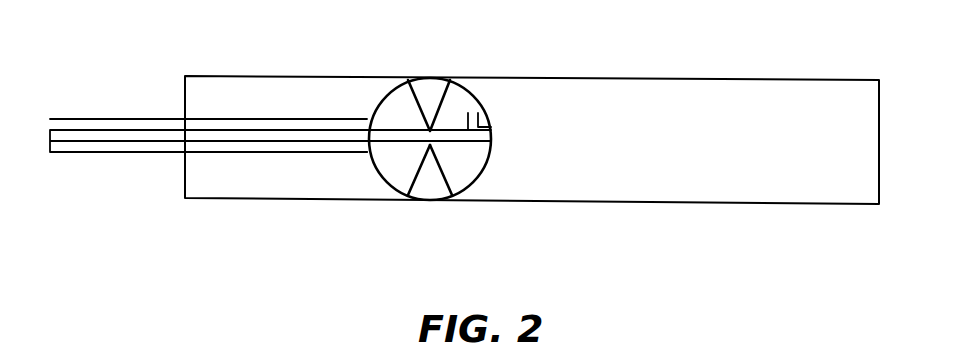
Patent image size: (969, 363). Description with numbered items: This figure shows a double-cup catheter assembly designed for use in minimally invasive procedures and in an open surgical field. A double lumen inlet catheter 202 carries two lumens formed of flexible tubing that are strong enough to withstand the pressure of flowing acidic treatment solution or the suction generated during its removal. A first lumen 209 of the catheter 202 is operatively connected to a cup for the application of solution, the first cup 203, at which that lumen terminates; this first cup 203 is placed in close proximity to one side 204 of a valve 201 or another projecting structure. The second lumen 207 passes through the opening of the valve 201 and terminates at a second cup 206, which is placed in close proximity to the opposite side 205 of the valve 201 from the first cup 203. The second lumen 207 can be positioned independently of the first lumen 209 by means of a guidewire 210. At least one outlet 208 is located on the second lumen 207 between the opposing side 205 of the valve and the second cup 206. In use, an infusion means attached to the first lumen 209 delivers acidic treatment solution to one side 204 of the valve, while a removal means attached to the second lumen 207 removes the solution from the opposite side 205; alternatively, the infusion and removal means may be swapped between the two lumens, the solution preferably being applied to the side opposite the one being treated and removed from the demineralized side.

The valve 201 is at (430, 78).
The double lumen inlet catheter 202 is at (128, 141).
The first cup 203 is at (383, 178).
The one side of the valve 204 is at (418, 177).
The opposite side of the valve 205 is at (443, 178).
The second cup 206 is at (473, 183).
The second lumen 207 is at (450, 131).
The outlet 208 is at (491, 125).
The first lumen 209 is at (310, 147).
The guidewire 210 is at (166, 119).